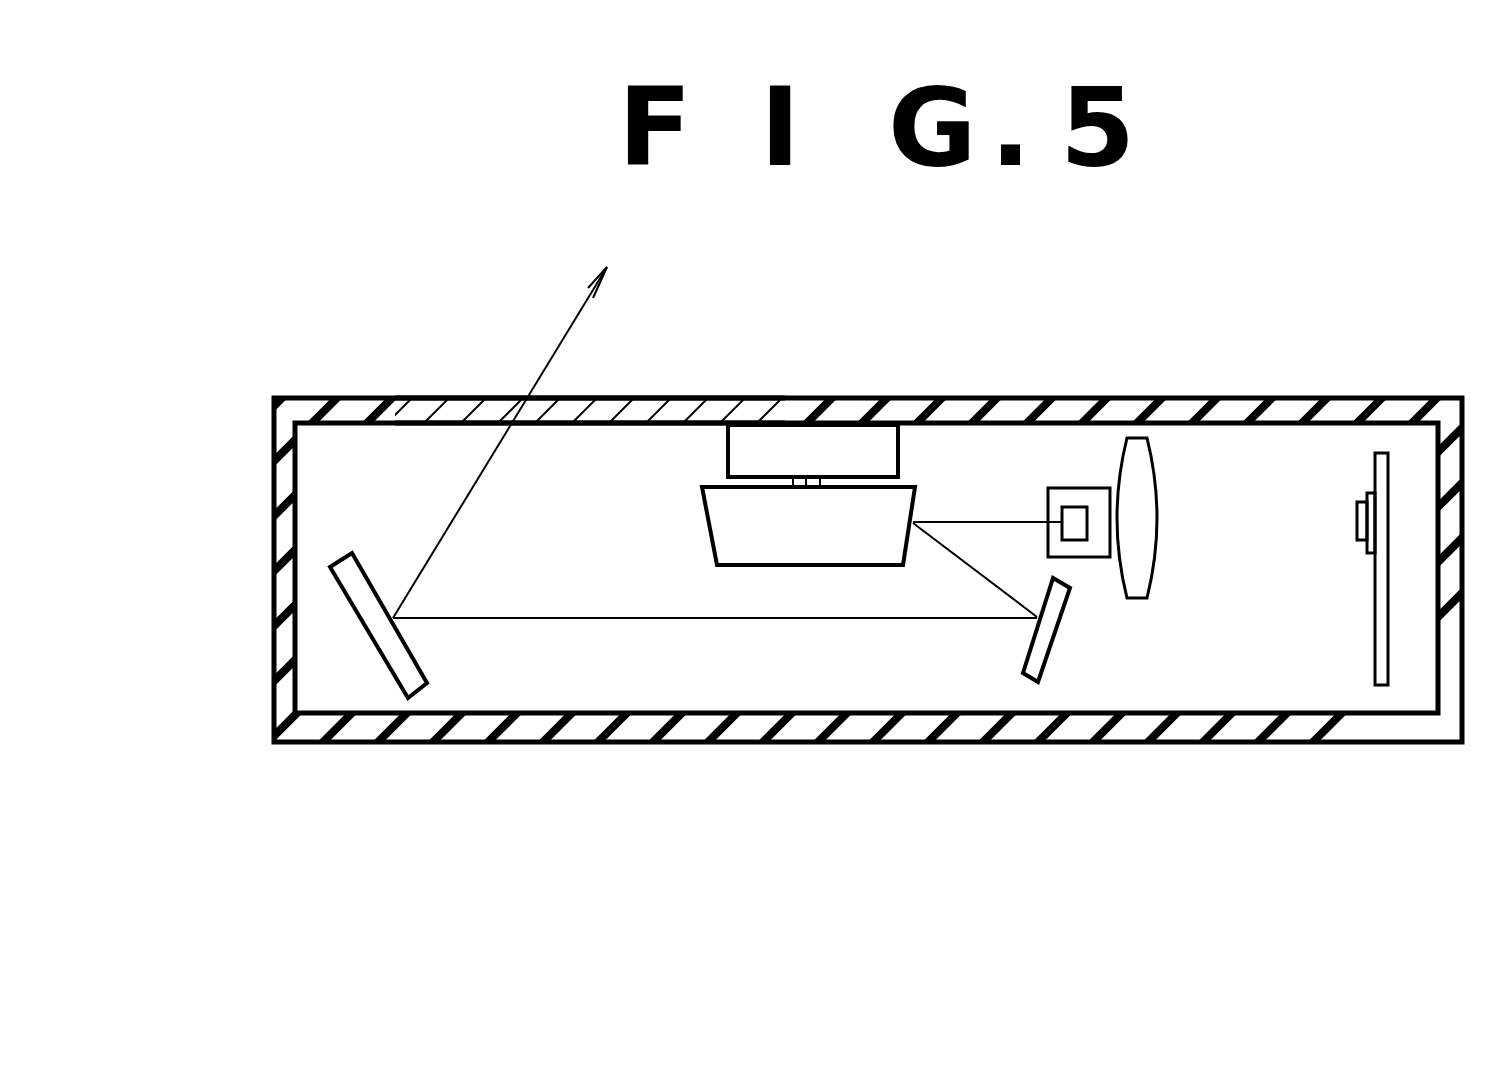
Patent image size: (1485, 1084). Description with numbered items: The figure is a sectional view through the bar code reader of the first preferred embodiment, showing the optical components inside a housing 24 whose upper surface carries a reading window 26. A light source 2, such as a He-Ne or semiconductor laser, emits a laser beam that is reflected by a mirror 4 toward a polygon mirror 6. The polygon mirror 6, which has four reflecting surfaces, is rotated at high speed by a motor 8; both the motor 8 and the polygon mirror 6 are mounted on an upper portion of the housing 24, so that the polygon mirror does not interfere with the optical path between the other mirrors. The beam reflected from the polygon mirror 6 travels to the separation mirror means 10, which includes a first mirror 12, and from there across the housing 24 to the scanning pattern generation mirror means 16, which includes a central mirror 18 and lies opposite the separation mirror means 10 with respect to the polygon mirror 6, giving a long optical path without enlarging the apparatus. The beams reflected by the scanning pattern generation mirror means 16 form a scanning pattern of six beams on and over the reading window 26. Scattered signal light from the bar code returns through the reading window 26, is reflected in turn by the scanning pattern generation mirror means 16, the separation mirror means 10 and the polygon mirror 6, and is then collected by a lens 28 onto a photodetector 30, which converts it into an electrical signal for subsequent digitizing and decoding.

The light source 2 is at (1048, 500).
The mirror 4 is at (1080, 507).
The polygon mirror 6 is at (702, 525).
The motor 8 is at (728, 455).
The separation mirror means 10 is at (1060, 636).
The first mirror 12 is at (1050, 672).
The scanning pattern generation mirror means 16 is at (363, 632).
The central mirror 18 is at (390, 672).
The housing 24 is at (1040, 398).
The reading window 26 is at (423, 398).
The lens 28 is at (1160, 503).
The photodetector 30 is at (1357, 530).